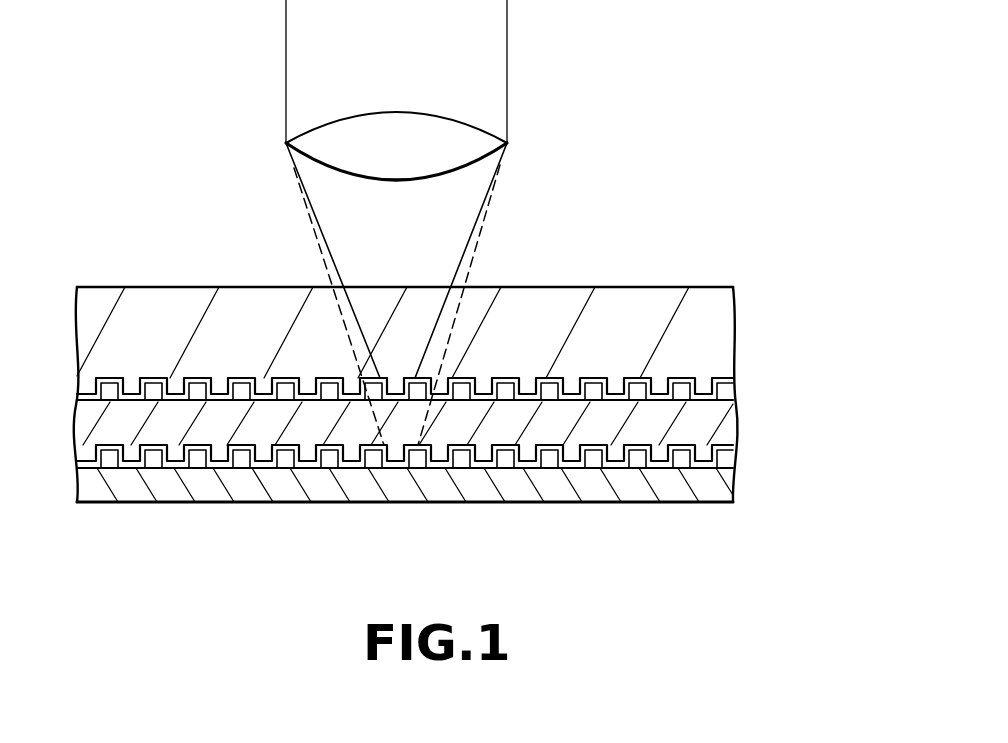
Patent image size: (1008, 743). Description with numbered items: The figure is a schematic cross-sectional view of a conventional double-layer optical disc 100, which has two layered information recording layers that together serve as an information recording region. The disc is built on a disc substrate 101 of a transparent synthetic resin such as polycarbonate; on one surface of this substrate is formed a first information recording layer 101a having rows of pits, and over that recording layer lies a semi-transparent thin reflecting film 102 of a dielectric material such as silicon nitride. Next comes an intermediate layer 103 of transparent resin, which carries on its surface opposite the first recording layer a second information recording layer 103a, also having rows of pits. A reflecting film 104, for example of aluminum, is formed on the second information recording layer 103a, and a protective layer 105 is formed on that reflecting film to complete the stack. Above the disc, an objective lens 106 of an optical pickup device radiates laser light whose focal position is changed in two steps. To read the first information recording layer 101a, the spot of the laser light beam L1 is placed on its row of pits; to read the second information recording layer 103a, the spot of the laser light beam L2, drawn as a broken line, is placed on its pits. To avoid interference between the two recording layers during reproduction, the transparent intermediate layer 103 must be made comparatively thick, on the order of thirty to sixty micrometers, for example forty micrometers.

The double-layer optical disc 100 is at (675, 223).
The disc substrate 101 is at (720, 313).
The first information recording layer 101a is at (703, 387).
The semi-transparent thin reflecting film 102 is at (735, 380).
The intermediate layer 103 is at (728, 413).
The second information recording layer 103a is at (703, 452).
The reflecting film 104 is at (735, 440).
The protective layer 105 is at (729, 504).
The objective lens 106 is at (463, 122).
The laser light beam L1 is at (470, 242).
The laser light beam L2 is at (472, 268).